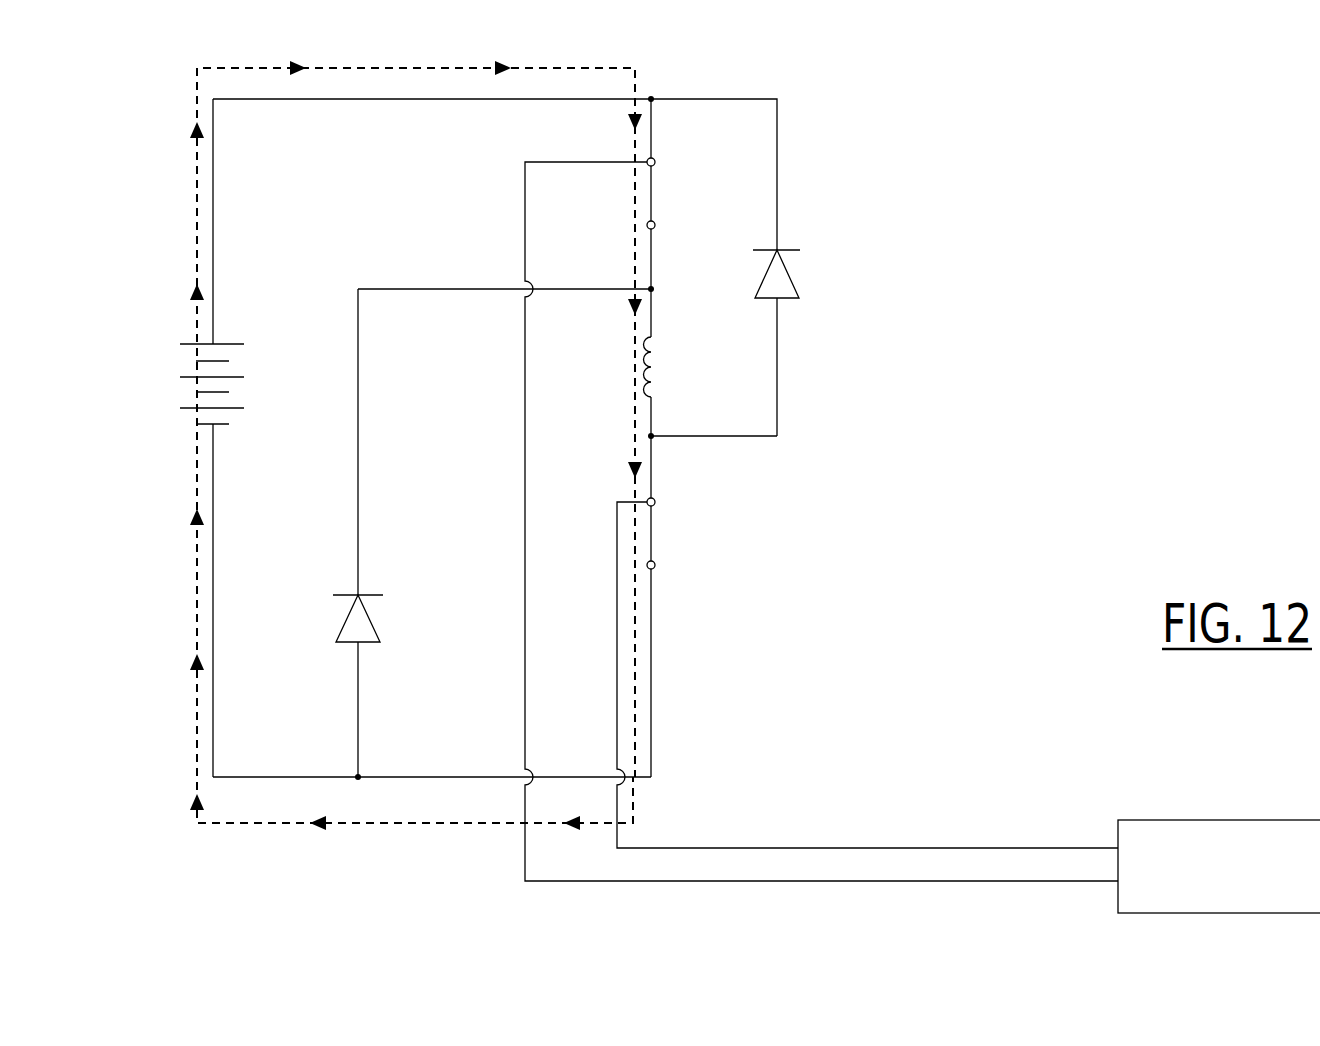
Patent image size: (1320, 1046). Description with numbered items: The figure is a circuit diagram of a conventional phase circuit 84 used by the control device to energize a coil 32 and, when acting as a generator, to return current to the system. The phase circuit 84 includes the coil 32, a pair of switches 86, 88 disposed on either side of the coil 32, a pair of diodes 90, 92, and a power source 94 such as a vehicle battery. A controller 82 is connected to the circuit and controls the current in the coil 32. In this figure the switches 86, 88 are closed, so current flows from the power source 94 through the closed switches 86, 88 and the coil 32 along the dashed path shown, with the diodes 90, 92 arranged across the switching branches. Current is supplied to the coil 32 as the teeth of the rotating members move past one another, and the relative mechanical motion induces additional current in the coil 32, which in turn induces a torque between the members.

The phase circuit 84 is at (840, 134).
The switch 86 is at (653, 192).
The switch 88 is at (652, 540).
The diode 92 is at (765, 287).
The diode 90 is at (346, 619).
The coil 32 is at (657, 368).
The power source 94 is at (180, 377).
The controller 82 is at (1135, 820).